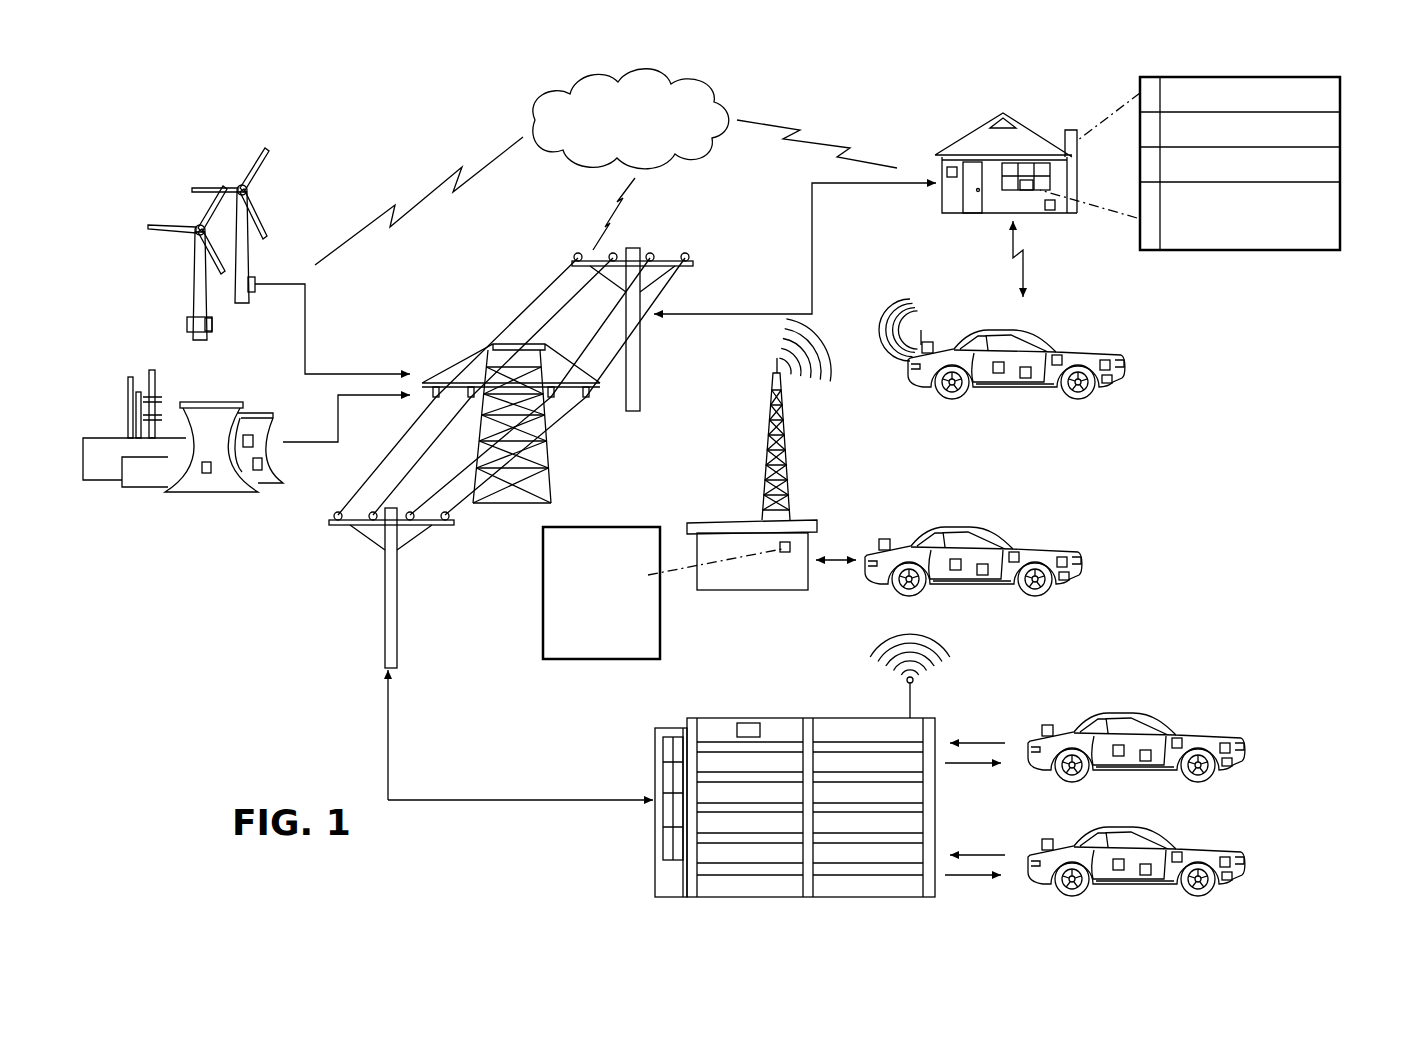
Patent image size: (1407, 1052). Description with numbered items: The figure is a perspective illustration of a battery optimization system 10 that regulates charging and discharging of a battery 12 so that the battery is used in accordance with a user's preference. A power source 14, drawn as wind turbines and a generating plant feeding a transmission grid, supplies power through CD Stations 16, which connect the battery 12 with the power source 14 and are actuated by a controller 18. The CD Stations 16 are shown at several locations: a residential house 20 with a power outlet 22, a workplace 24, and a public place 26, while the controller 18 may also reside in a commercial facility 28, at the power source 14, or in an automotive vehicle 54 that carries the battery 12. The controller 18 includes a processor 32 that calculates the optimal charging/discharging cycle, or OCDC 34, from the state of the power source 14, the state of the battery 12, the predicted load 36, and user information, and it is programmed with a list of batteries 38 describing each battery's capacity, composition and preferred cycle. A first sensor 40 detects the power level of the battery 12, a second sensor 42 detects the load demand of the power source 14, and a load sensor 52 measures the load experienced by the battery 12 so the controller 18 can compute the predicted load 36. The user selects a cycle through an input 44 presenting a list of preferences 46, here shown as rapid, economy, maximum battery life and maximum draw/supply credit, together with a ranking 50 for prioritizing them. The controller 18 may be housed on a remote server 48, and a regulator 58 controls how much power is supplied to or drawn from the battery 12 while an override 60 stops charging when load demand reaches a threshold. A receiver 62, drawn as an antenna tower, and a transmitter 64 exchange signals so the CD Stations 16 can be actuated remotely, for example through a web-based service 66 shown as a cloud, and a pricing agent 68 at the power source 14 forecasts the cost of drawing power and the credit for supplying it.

The battery optimization system 10 is at (828, 127).
The battery 12 is at (1158, 590).
The power source 14 is at (266, 204).
The CD Station 16 is at (945, 200).
The controller 18 is at (215, 330).
The residential house 20 is at (1048, 108).
The power outlet 22 is at (1050, 210).
The workplace 24 is at (815, 765).
The public place 26 is at (757, 454).
The commercial facility 28 is at (686, 708).
The processor 32 is at (206, 475).
The optimal charging/discharging cycle (OCDC) 34 is at (1340, 92).
The predicted load 36 is at (1011, 245).
The list of batteries 38 is at (603, 527).
The first sensor 40 is at (1106, 587).
The second sensor 42 is at (188, 320).
The input 44 is at (1026, 181).
The list of preferences 46 is at (1246, 146).
The server 48 is at (631, 119).
The ranking 50 is at (1150, 77).
The load sensor 52 is at (1048, 586).
The automotive vehicle 54 is at (1071, 591).
The regulator 58 is at (977, 576).
The override 60 is at (1169, 642).
The receiver 62 is at (768, 420).
The transmitter 64 is at (901, 314).
The web-based service 66 is at (631, 119).
The pricing agent 68 is at (254, 280).